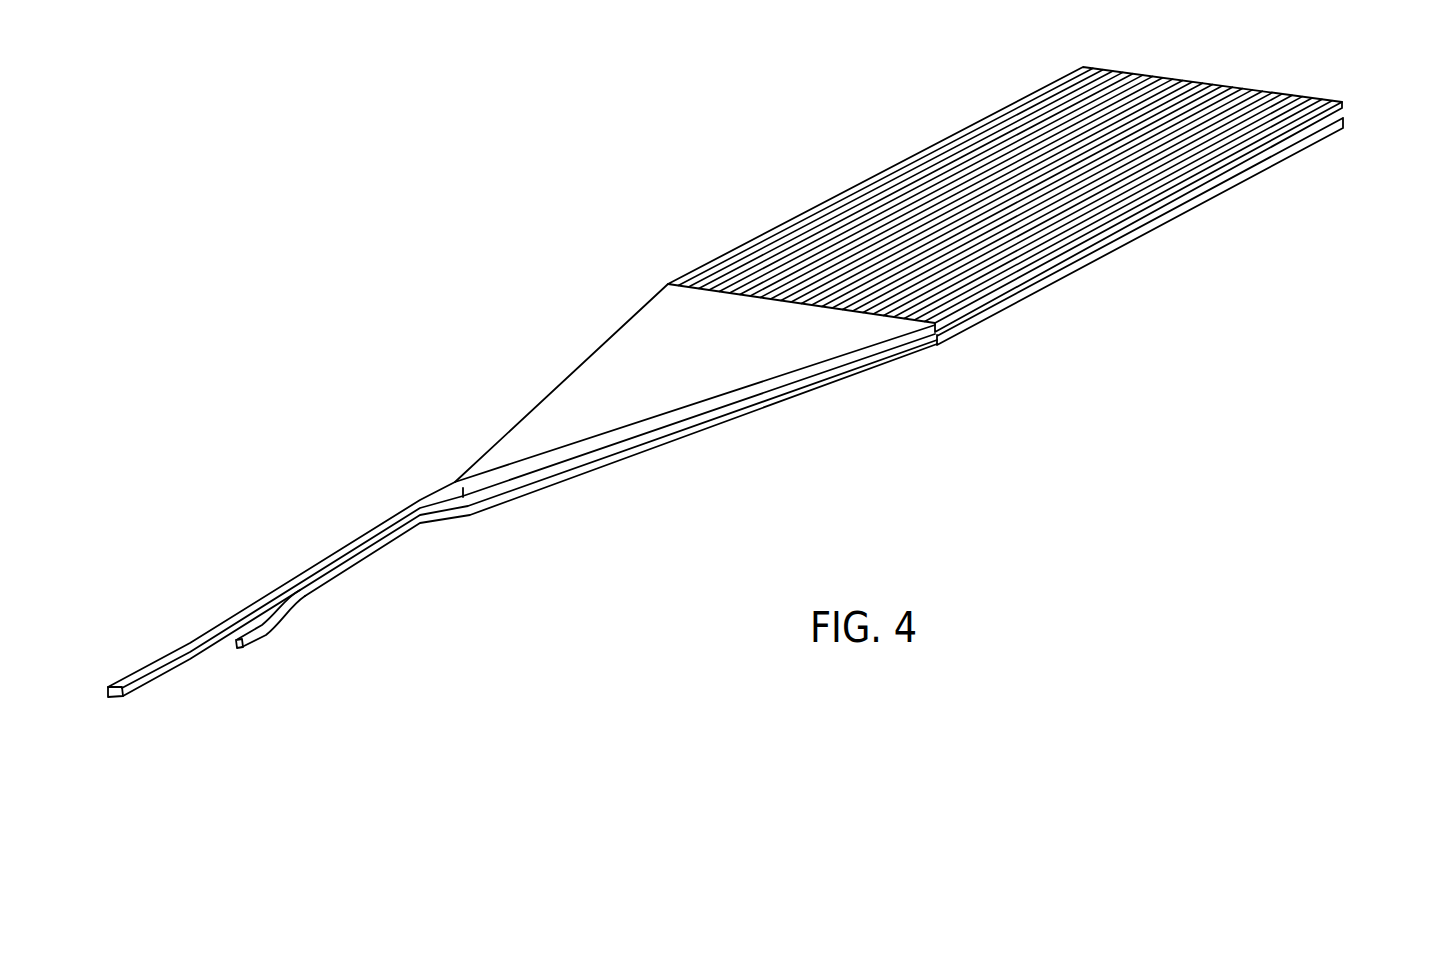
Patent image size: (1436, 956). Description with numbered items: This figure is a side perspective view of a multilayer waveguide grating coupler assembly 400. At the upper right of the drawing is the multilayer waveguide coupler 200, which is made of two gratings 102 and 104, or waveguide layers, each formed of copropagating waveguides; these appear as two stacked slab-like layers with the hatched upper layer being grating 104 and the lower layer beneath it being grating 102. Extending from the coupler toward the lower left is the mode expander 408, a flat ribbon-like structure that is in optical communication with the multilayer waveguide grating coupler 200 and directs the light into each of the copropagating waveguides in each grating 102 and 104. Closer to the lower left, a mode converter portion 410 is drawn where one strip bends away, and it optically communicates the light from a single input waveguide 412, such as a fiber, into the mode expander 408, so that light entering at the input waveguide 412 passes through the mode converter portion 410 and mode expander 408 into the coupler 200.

The multilayer waveguide grating coupler assembly 400 is at (490, 274).
The grating 104 is at (1331, 89).
The grating 102 is at (1351, 126).
The multilayer waveguide coupler 200 is at (1117, 212).
The mode expander 408 is at (750, 372).
The mode converter portion 410 is at (312, 615).
The single input waveguide 412 is at (110, 686).